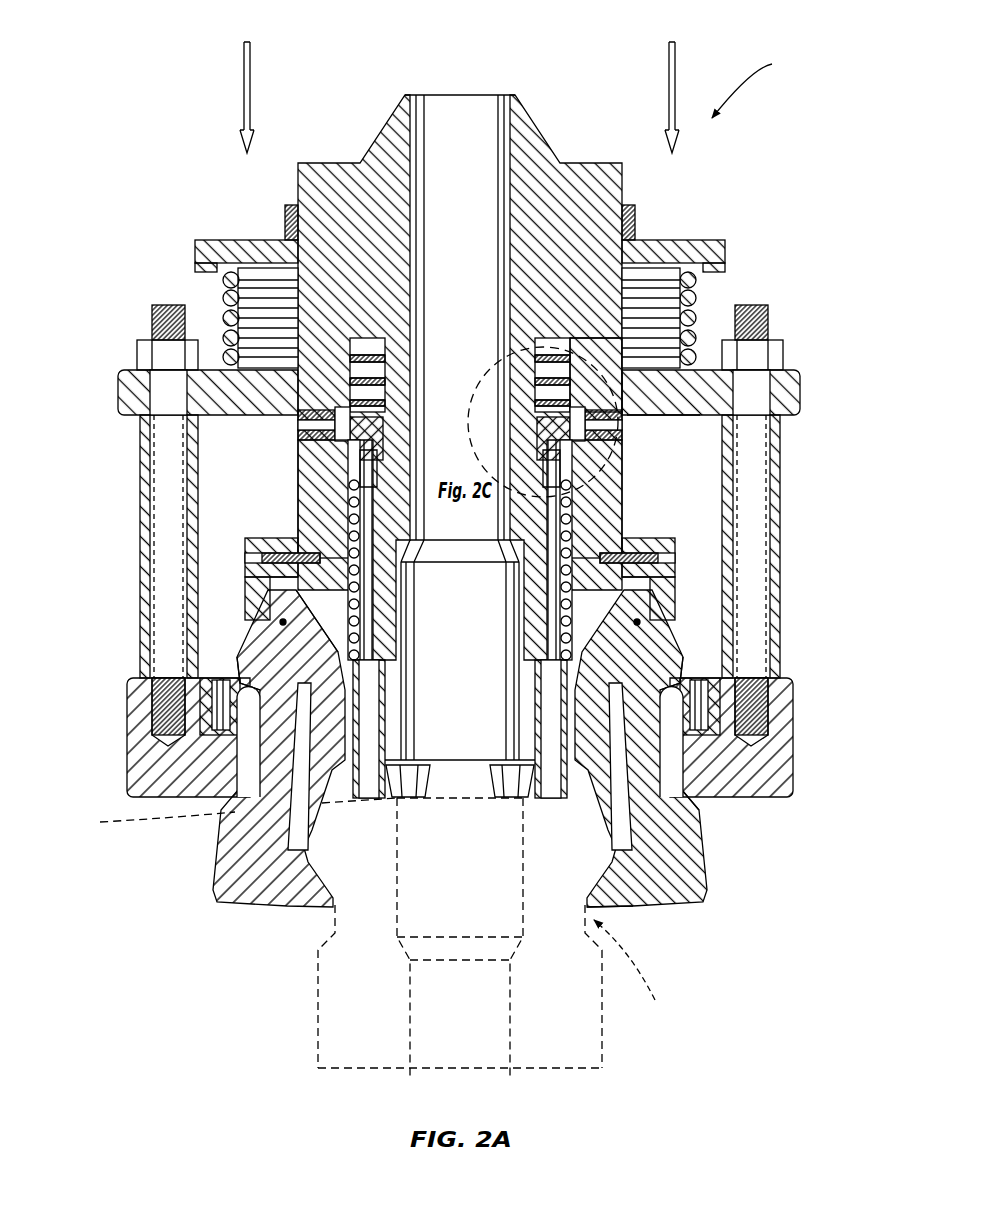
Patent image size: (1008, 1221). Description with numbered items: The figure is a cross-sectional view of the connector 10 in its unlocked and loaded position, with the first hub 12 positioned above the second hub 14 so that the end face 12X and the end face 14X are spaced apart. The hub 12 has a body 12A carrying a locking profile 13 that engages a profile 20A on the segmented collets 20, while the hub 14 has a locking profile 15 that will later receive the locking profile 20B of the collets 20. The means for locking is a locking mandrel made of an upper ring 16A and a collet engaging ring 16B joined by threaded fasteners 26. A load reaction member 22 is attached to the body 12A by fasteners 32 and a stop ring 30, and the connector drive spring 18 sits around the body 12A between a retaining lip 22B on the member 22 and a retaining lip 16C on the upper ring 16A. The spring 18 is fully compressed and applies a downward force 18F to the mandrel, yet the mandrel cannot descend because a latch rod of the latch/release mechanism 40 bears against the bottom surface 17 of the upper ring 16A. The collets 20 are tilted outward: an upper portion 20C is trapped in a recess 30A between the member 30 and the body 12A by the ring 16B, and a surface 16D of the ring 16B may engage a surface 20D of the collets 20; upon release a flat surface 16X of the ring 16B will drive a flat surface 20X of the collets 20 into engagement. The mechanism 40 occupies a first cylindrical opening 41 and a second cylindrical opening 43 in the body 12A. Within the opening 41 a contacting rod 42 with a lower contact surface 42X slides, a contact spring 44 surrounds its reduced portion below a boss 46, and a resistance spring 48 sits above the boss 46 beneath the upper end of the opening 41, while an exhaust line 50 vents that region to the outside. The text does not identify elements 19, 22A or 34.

The connector 10 is at (754, 82).
The first hub 12 is at (516, 118).
The body 12A is at (345, 170).
The end face 12X is at (250, 765).
The locking profile 13 is at (302, 655).
The second hub 14 is at (318, 1005).
The end face 14X is at (240, 807).
The locking profile 15 is at (627, 972).
The upper ring 16A is at (792, 392).
The collet engaging ring 16B is at (782, 745).
The retaining lip 16C is at (210, 366).
The surface 16D is at (215, 700).
The flat surface 16X is at (225, 720).
The bottom surface 17 is at (690, 423).
The connector drive spring 18 is at (222, 300).
The downward force 18F is at (252, 68).
The ring top 19 is at (625, 353).
The segmented collets 20 is at (216, 882).
The profile 20A is at (290, 625).
The locking profile 20B is at (650, 905).
The upper portion 20C is at (642, 605).
The surface 20D is at (252, 685).
The flat surface 20X is at (703, 835).
The load reaction member 22 is at (700, 243).
The flange spring seat 22A is at (700, 300).
The retaining lip 22B is at (205, 268).
The threaded fasteners 26 is at (774, 480).
The stop ring 30 is at (662, 600).
The recess 30A is at (652, 580).
The fasteners 32 is at (637, 222).
The screw 34 is at (662, 558).
The latch/release mechanism 40 is at (320, 312).
The first cylindrical opening 41 is at (388, 352).
The contacting rod 42 is at (545, 700).
The lower contact surface 42X is at (300, 830).
The second cylindrical opening 43 is at (300, 448).
The contact spring 44 is at (520, 590).
The boss 46 is at (540, 440).
The resistance spring 48 is at (538, 378).
The exhaust line 50 is at (596, 350).